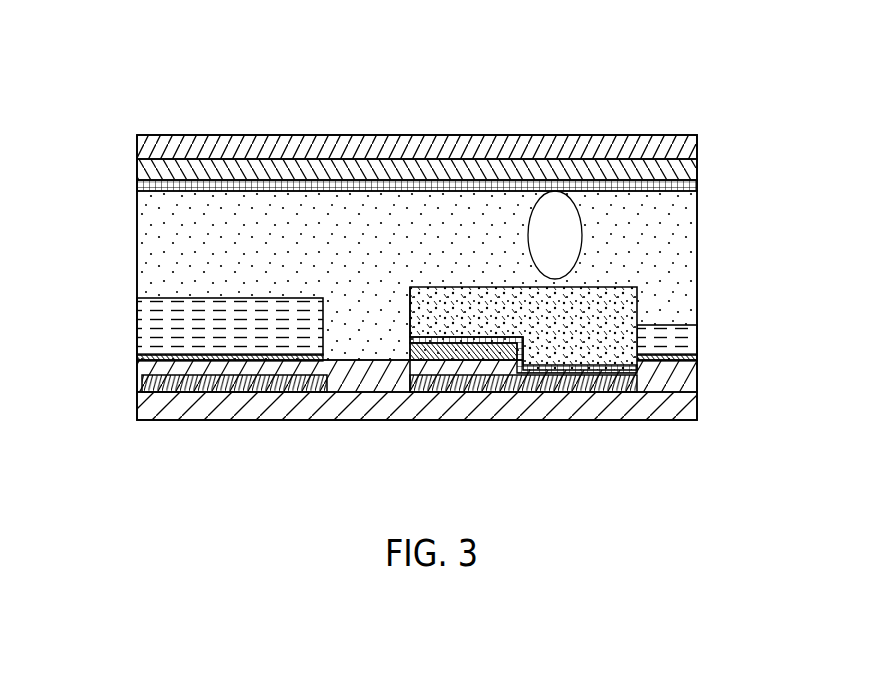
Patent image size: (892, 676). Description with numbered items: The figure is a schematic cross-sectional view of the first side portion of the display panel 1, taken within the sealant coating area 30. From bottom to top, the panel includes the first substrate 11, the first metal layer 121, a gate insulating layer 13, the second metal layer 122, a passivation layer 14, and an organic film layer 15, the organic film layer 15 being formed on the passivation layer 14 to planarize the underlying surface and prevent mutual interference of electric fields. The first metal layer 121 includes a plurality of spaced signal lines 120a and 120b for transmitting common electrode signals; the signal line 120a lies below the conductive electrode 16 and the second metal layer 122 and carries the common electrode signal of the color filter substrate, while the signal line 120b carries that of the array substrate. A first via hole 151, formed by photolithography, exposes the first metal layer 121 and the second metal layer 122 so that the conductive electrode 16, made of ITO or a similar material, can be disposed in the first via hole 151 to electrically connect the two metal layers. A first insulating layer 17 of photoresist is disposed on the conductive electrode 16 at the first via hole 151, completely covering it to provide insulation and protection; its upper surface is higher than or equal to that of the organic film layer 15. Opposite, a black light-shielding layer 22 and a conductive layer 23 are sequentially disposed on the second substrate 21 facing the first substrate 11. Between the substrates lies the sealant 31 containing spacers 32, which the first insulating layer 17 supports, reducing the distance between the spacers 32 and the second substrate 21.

The display panel 1 is at (102, 78).
The first substrate 11 is at (137, 408).
The gate insulating layer 13 is at (137, 374).
The passivation layer 14 is at (137, 357).
The organic film layer 15 is at (137, 305).
The conductive electrode 16 is at (538, 330).
The first insulating layer 17 is at (437, 287).
The second substrate 21 is at (137, 143).
The black light-shielding layer 22 is at (137, 165).
The conductive layer 23 is at (137, 185).
The sealant coating area 30 is at (778, 207).
The sealant 31 is at (697, 263).
The spacers 32 is at (583, 215).
The signal line 120a is at (407, 393).
The signal line 120b is at (335, 393).
The first metal layer 121 is at (420, 477).
The second metal layer 122 is at (430, 380).
The first via hole 151 is at (403, 315).